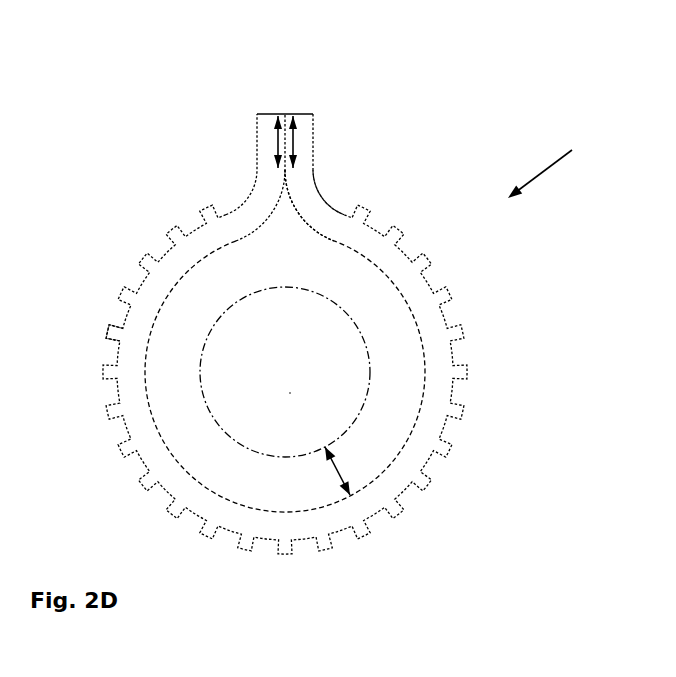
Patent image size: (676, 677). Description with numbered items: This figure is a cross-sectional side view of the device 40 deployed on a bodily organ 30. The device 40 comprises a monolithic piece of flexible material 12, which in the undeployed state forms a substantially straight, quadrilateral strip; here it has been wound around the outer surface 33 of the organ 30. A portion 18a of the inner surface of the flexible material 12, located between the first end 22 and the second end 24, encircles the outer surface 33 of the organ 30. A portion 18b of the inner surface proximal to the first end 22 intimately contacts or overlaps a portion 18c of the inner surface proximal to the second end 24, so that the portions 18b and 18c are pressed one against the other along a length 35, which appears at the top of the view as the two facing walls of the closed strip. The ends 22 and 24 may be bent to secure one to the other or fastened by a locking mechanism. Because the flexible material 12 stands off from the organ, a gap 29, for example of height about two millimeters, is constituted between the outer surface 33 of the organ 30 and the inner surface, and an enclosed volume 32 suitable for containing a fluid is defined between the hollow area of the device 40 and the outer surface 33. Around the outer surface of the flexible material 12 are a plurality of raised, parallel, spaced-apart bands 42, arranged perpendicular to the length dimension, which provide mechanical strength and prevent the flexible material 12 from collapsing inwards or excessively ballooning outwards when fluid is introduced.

The flexible material 12 is at (130, 268).
The bands 42 is at (108, 328).
The enclosed volume 32 is at (197, 408).
The outer surface of organ 33 is at (348, 315).
The organ 30 is at (290, 393).
The gap 29 is at (332, 470).
The portion of the inner surface 18a is at (343, 243).
The portion of the inner surface proximal to first end 18b is at (260, 138).
The portion of the inner surface proximal to second end 18c is at (307, 138).
The length 35 is at (293, 140).
The first end 22 is at (270, 112).
The second end 24 is at (303, 112).
The device 40 is at (555, 164).